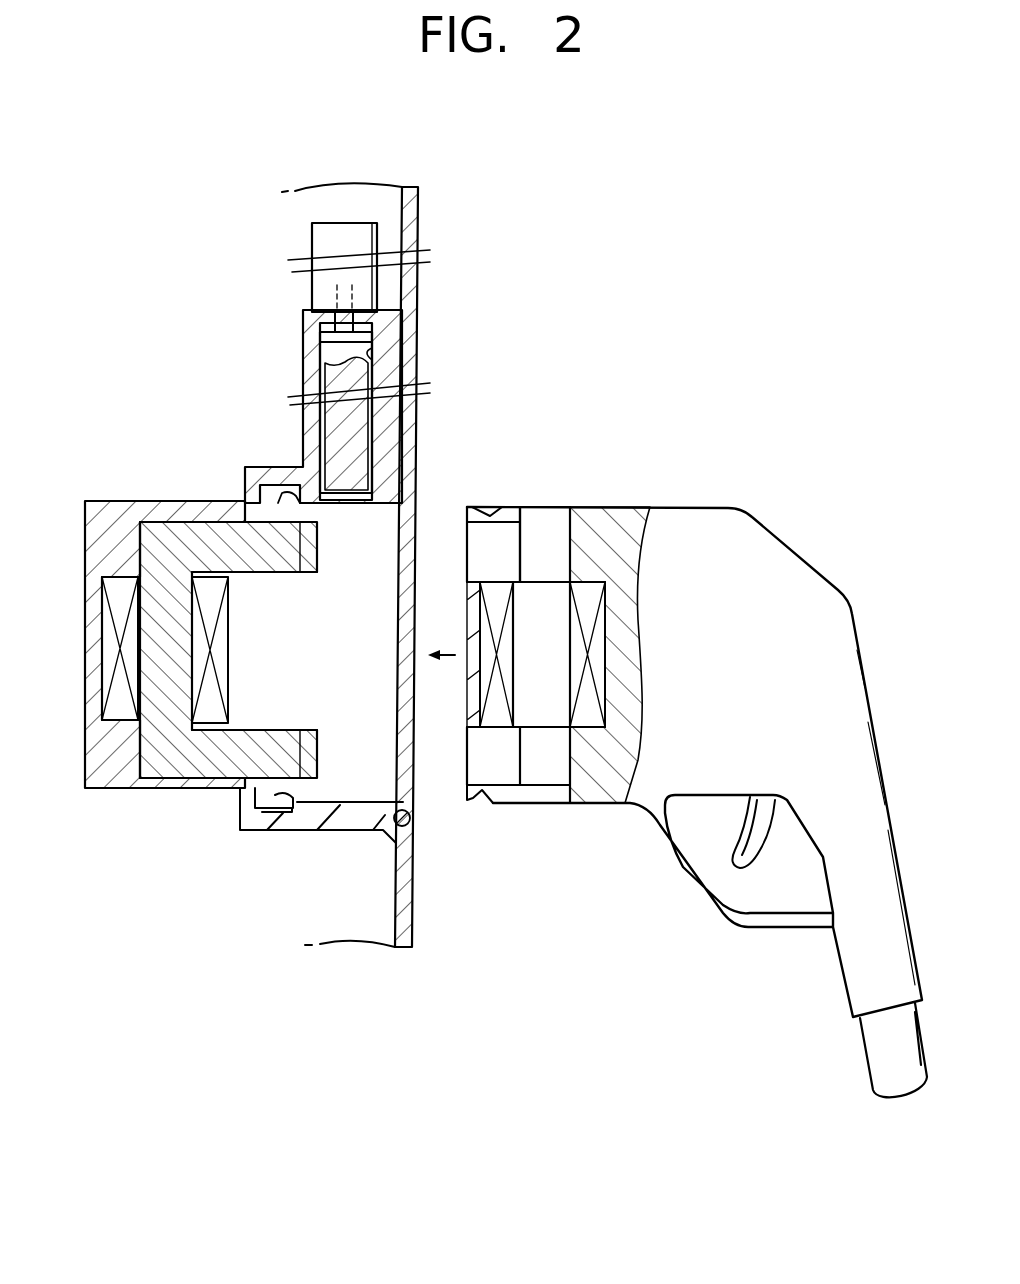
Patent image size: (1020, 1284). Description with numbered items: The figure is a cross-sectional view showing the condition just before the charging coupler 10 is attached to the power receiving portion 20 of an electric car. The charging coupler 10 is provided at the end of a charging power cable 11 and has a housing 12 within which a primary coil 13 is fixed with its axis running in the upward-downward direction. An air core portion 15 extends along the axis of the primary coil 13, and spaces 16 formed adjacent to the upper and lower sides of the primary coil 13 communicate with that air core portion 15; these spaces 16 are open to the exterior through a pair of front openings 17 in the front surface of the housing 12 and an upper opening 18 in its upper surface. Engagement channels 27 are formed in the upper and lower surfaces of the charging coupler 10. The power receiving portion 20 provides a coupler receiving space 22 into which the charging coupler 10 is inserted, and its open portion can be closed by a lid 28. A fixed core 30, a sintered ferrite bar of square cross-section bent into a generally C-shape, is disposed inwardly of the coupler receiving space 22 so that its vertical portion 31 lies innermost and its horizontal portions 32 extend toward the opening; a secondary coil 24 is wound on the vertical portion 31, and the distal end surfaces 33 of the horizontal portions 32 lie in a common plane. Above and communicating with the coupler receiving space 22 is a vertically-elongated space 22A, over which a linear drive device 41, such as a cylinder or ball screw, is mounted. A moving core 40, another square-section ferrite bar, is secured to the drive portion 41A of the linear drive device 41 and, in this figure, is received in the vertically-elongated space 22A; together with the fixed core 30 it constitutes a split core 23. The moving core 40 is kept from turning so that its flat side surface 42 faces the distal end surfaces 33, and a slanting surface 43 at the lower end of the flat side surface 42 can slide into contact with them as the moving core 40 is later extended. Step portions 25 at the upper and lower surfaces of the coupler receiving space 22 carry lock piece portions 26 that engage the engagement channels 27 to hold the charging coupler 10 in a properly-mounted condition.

The charging coupler 10 is at (622, 420).
The charging power cable 11 is at (880, 1048).
The housing 12 is at (808, 560).
The primary coil 13 is at (600, 570).
The air core portion 15 is at (565, 705).
The spaces 16 is at (555, 525).
The front openings 17 is at (462, 560).
The upper opening 18 is at (548, 507).
The power receiving portion 20 is at (175, 258).
The coupler receiving space 22 is at (378, 513).
The vertically-elongated space 22A is at (372, 358).
The split core 23 is at (208, 327).
The secondary coil 24 is at (120, 715).
The step portions 25 is at (262, 800).
The lock piece portions 26 is at (282, 806).
The engagement channels 27 is at (492, 507).
The lid 28 is at (405, 700).
The fixed core 30 is at (155, 500).
The vertical portion 31 is at (175, 733).
The horizontal portions 32 is at (250, 575).
The distal end surfaces 33 is at (320, 555).
The moving core 40 is at (302, 377).
The linear drive device 41 is at (360, 235).
The drive portion 41A is at (307, 323).
The flat side surface 42 is at (322, 435).
The slanting surface 43 is at (323, 478).